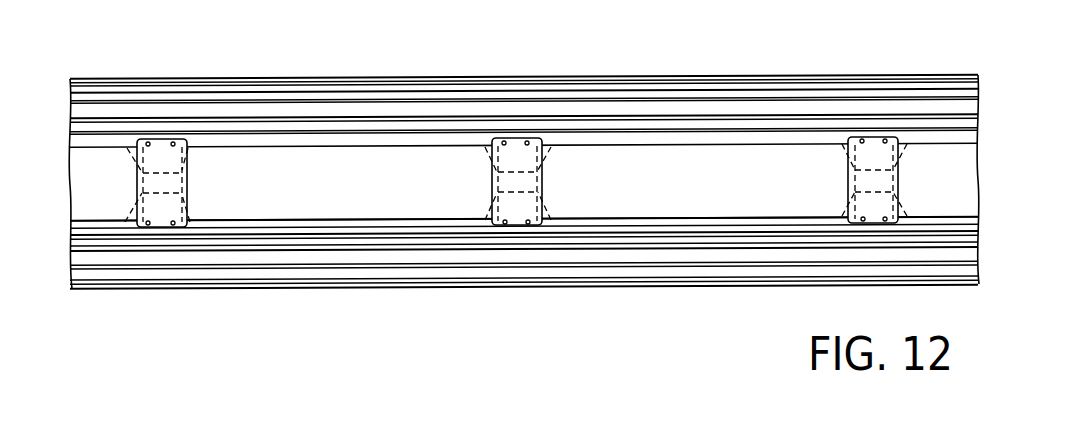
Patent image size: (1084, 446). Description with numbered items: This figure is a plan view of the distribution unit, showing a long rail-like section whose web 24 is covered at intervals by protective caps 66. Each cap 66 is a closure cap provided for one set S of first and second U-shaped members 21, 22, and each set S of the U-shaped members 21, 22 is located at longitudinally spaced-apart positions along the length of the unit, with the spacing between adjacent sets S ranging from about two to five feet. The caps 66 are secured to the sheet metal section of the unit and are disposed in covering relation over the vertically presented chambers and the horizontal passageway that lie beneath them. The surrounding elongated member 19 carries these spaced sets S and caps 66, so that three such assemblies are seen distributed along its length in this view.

The rail 19 is at (683, 128).
The flat web portion of rail 24 is at (338, 196).
The protective cap 66 is at (162, 159).
The second U-shaped member 22 is at (190, 162).
The first U-shaped member 21 is at (190, 208).
The set of U-shaped members S is at (119, 185).